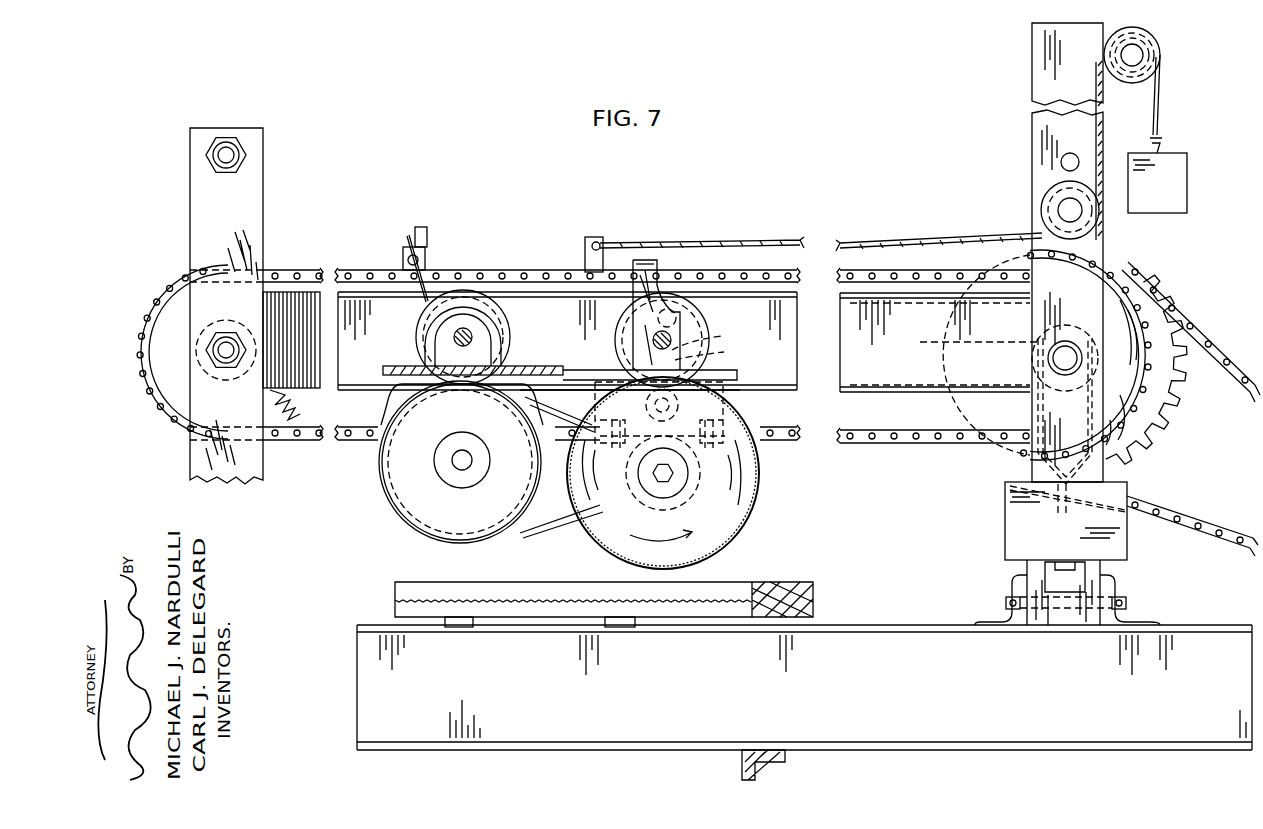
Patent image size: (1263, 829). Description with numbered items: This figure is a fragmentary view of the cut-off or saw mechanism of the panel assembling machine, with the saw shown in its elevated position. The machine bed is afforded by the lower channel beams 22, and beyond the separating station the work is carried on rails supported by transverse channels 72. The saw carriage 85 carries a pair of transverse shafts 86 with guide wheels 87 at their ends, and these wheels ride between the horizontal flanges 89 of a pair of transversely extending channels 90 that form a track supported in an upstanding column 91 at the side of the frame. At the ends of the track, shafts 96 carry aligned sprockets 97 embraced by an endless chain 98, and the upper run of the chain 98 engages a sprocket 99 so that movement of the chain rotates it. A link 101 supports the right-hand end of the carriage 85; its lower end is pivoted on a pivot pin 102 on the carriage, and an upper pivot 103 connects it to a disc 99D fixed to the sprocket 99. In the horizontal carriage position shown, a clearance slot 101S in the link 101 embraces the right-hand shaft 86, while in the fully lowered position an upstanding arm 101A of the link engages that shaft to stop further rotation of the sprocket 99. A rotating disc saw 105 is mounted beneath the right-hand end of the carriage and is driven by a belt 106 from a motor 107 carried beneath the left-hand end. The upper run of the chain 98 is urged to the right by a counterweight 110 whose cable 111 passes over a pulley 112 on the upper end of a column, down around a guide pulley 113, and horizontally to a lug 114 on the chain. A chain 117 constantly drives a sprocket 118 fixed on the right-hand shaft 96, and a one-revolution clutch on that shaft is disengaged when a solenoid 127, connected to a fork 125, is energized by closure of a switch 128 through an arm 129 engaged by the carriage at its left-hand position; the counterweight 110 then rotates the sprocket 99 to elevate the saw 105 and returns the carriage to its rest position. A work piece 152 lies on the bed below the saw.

The lower channel beam 22 is at (762, 771).
The transverse channel 72 is at (577, 722).
The saw carriage 85 is at (525, 370).
The transverse shaft 86 is at (465, 332).
The guide wheel 87 is at (420, 342).
The horizontal flange 89 is at (356, 288).
The channel 90 is at (548, 300).
The upstanding column 91 is at (258, 216).
The shaft 96 is at (212, 355).
The sprocket 97 is at (282, 415).
The endless chain 98 is at (302, 268).
The sprocket 99 is at (704, 332).
The disc 99D is at (713, 350).
The link 101 is at (636, 318).
The upstanding arm 101A is at (646, 262).
The clearance slot 101S is at (713, 336).
The pivot pin 102 is at (678, 405).
The upper pivot 103 is at (668, 312).
The disc saw 105 is at (750, 505).
The belt 106 is at (552, 530).
The motor 107 is at (440, 536).
The counterweight 110 is at (1180, 178).
The cable 111 is at (890, 240).
The pulley 112 is at (1158, 42).
The guide pulley 113 is at (1042, 200).
The lug 114 is at (600, 238).
The chain 117 is at (1232, 388).
The sprocket 118 is at (1160, 420).
The fork 125 is at (1007, 490).
The solenoid 127 is at (1022, 524).
The switch 128 is at (423, 226).
The arm 129 is at (418, 300).
The workpiece end 152 is at (765, 590).